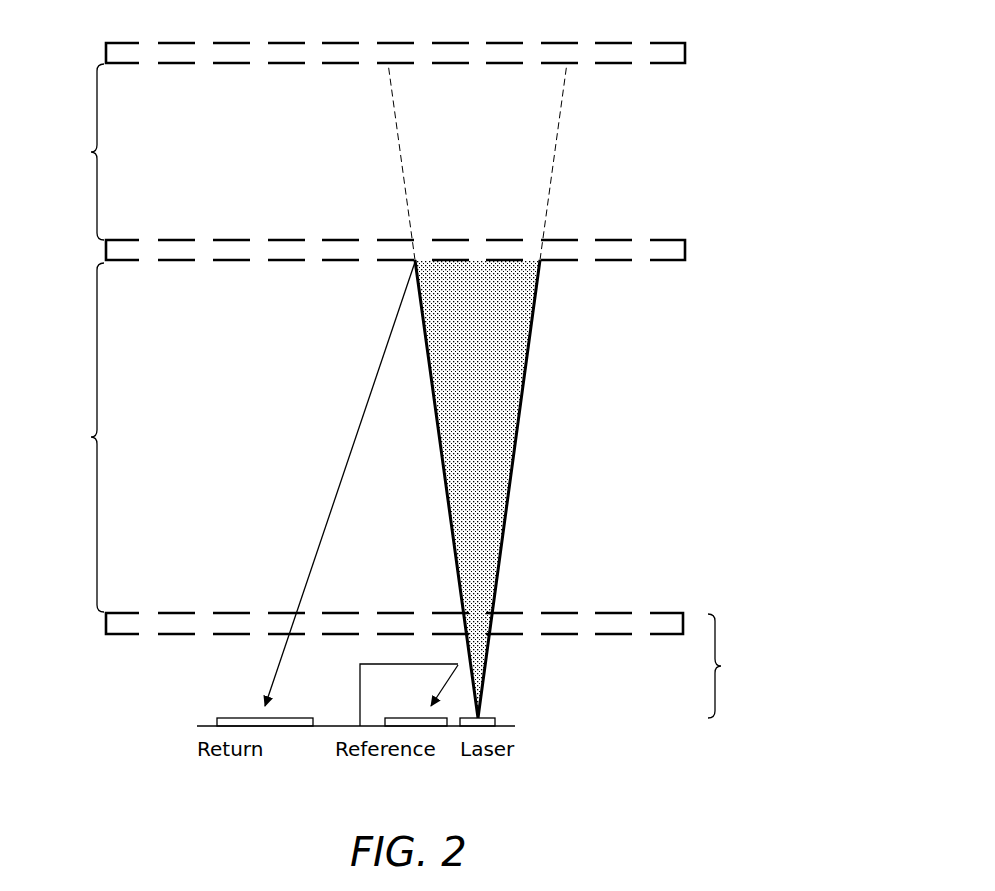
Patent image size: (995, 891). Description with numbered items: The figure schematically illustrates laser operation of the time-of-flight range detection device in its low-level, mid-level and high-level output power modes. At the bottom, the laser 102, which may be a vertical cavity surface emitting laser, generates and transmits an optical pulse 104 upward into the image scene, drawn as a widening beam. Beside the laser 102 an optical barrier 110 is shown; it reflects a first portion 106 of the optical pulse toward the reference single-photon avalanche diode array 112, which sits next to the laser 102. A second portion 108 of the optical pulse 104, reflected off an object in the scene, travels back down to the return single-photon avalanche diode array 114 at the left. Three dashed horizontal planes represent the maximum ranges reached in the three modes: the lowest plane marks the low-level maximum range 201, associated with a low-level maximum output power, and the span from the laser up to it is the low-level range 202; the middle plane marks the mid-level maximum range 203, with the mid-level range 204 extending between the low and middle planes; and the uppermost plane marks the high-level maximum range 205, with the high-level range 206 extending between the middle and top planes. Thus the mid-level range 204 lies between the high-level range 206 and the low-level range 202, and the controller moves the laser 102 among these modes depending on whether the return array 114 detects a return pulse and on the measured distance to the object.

The laser 102 is at (490, 718).
The optical pulse 104 is at (512, 487).
The first portion of the optical pulse 106 is at (443, 683).
The second portion of the optical pulse 108 is at (333, 488).
The optical barrier 110 is at (360, 676).
The reference single-photon avalanche diode array 112 is at (420, 718).
The return single-photon avalanche diode array 114 is at (247, 718).
The low-level maximum range 201 is at (683, 613).
The low-level range 202 is at (735, 666).
The mid-level maximum range 203 is at (686, 250).
The mid-level range 204 is at (77, 437).
The high-level maximum range 205 is at (686, 52).
The high-level range 206 is at (77, 152).